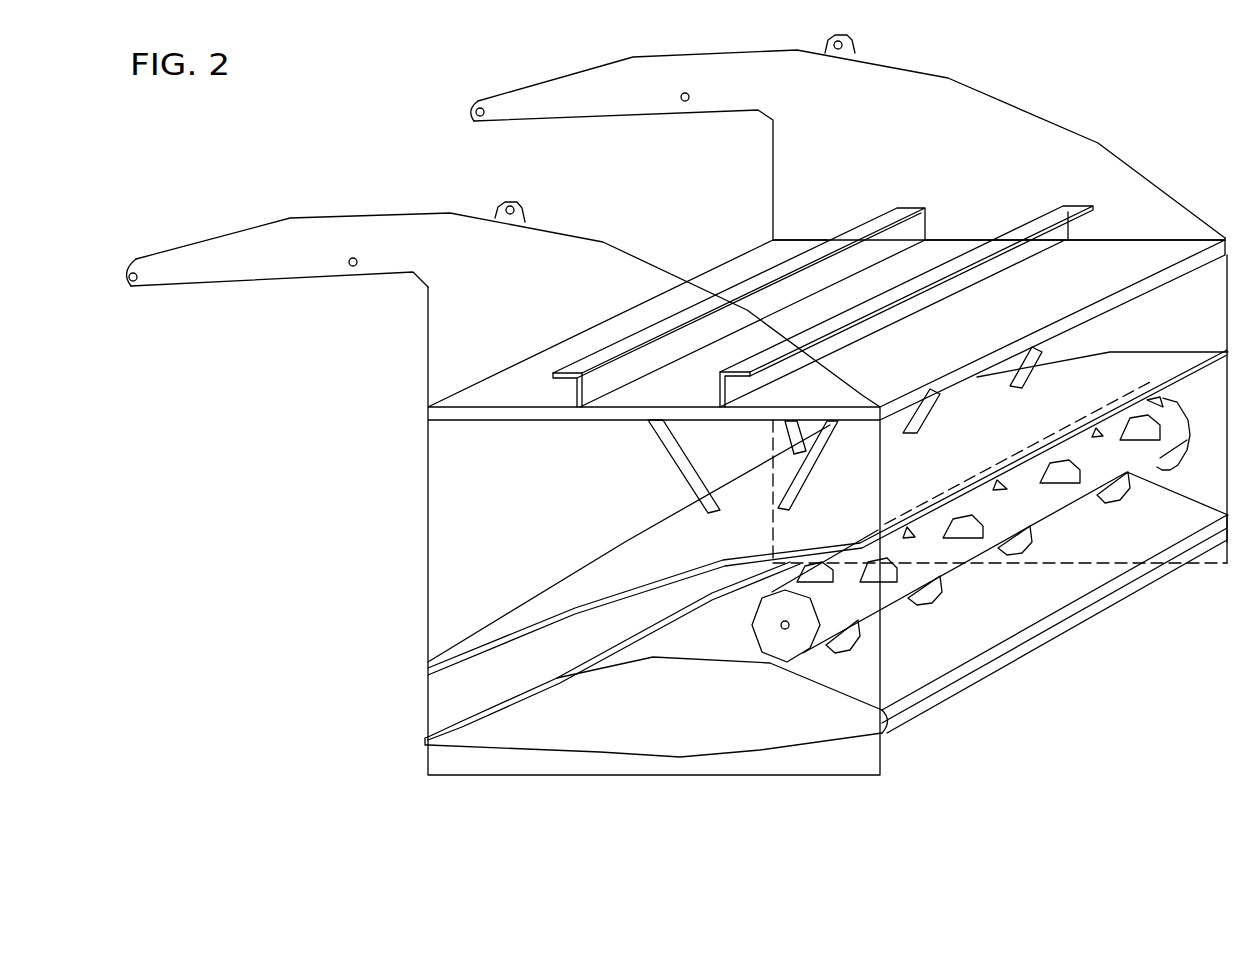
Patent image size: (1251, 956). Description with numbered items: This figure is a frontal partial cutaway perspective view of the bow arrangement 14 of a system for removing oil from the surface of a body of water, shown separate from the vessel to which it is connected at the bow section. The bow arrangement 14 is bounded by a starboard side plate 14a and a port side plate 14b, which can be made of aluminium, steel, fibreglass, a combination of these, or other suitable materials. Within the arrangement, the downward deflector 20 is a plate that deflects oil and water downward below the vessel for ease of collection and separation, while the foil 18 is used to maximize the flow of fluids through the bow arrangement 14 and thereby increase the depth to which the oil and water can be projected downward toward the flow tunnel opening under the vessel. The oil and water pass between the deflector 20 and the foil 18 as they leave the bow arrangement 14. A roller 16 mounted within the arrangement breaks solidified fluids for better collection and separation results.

The bow arrangement 14 is at (743, 272).
The starboard side plate 14a is at (520, 243).
The port side plate 14b is at (1030, 145).
The roller 16 is at (887, 602).
The foil 18 is at (625, 743).
The downward deflector 20 is at (637, 553).